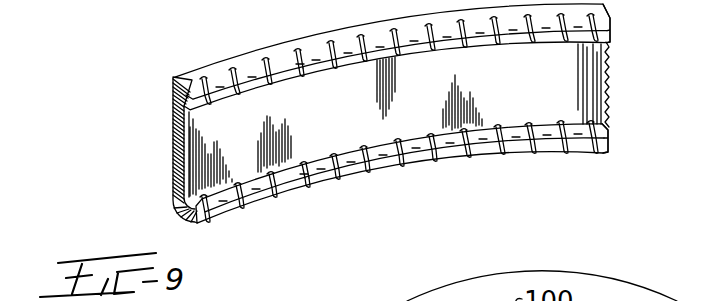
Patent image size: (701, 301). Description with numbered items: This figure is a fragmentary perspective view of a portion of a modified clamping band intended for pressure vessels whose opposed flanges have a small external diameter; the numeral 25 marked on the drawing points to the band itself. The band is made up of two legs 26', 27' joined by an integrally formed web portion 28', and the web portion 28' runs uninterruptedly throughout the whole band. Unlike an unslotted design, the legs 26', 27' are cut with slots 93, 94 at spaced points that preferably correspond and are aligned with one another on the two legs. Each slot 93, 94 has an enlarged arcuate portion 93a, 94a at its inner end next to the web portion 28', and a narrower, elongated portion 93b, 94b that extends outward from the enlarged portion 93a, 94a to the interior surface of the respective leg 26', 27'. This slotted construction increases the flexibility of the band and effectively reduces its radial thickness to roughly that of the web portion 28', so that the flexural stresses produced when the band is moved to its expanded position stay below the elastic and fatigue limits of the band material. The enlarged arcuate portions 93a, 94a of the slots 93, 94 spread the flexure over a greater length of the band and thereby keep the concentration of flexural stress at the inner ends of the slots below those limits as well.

The slot 94 is at (210, 102).
The enlarged arcuate portion 94a is at (357, 34).
The narrower elongated portion 94b is at (341, 70).
The slot 93 is at (220, 212).
The enlarged arcuate portion 93a is at (363, 146).
The narrower elongated portion 93b is at (363, 183).
The web portion 28' is at (171, 150).
The right side member 25 is at (583, 74).
The leg 27' is at (636, 30).
The leg 26' is at (636, 139).